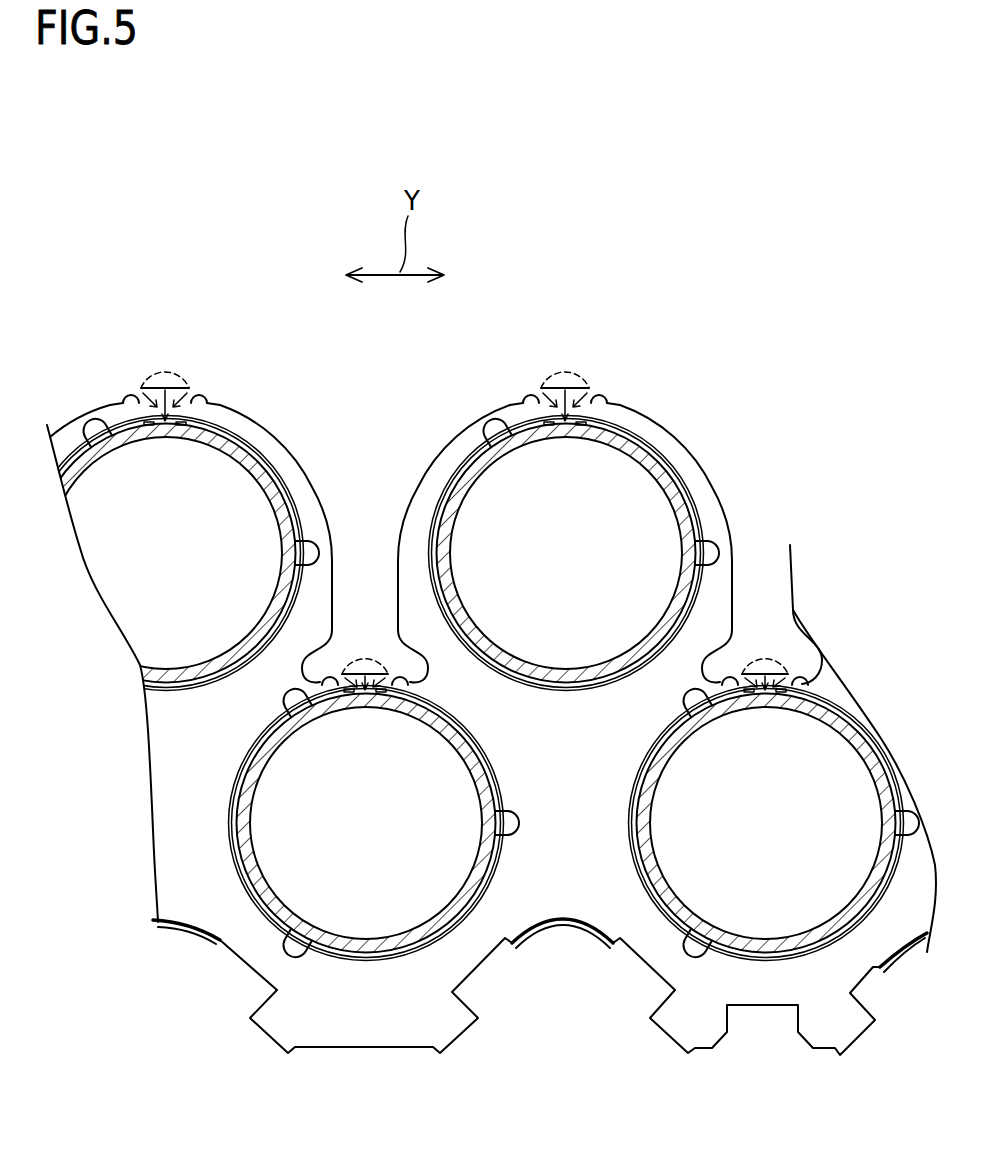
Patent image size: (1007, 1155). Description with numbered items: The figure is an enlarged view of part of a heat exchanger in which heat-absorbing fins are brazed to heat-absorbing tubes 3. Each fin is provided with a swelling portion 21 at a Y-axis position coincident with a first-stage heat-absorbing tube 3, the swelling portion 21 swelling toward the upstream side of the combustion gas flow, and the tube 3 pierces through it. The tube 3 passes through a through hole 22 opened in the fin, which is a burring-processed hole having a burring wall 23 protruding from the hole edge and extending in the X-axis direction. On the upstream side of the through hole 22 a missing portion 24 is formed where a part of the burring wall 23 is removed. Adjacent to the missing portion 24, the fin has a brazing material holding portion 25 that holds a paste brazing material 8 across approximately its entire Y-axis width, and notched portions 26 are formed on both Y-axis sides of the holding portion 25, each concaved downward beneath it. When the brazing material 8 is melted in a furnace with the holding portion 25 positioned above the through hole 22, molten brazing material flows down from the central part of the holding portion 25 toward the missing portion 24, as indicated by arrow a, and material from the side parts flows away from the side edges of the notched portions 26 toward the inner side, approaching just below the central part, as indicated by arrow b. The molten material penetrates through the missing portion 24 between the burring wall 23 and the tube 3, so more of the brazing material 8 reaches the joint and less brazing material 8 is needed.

The heat-absorbing tube 3 is at (268, 490).
The brazing material 8 is at (165, 372).
The swelling portion 21 is at (253, 427).
The through hole 22 is at (284, 477).
The burring wall 23 is at (288, 492).
The missing portion 24 is at (165, 420).
The brazing material holding portion 25 is at (175, 388).
The notched portion 26 is at (125, 405).
The arrow a is at (172, 390).
The arrow b is at (139, 392).